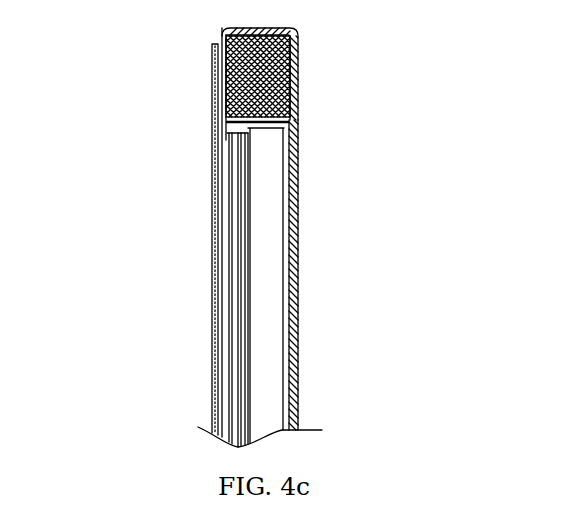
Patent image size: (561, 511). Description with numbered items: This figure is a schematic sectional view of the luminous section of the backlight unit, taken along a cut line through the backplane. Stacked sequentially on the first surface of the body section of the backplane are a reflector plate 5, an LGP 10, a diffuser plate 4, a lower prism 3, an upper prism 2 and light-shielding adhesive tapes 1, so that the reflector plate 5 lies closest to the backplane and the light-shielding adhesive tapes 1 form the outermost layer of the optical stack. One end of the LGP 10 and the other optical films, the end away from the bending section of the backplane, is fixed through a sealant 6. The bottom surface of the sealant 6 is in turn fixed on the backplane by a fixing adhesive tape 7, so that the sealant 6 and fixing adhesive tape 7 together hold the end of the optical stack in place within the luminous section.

The light-shielding adhesive tapes 1 is at (220, 103).
The upper prism 2 is at (233, 217).
The lower prism 3 is at (240, 254).
The diffuser plate 4 is at (247, 292).
The reflector plate 5 is at (287, 235).
The sealant 6 is at (265, 77).
The fixing adhesive tape 7 is at (297, 53).
The LGP 10 is at (267, 189).